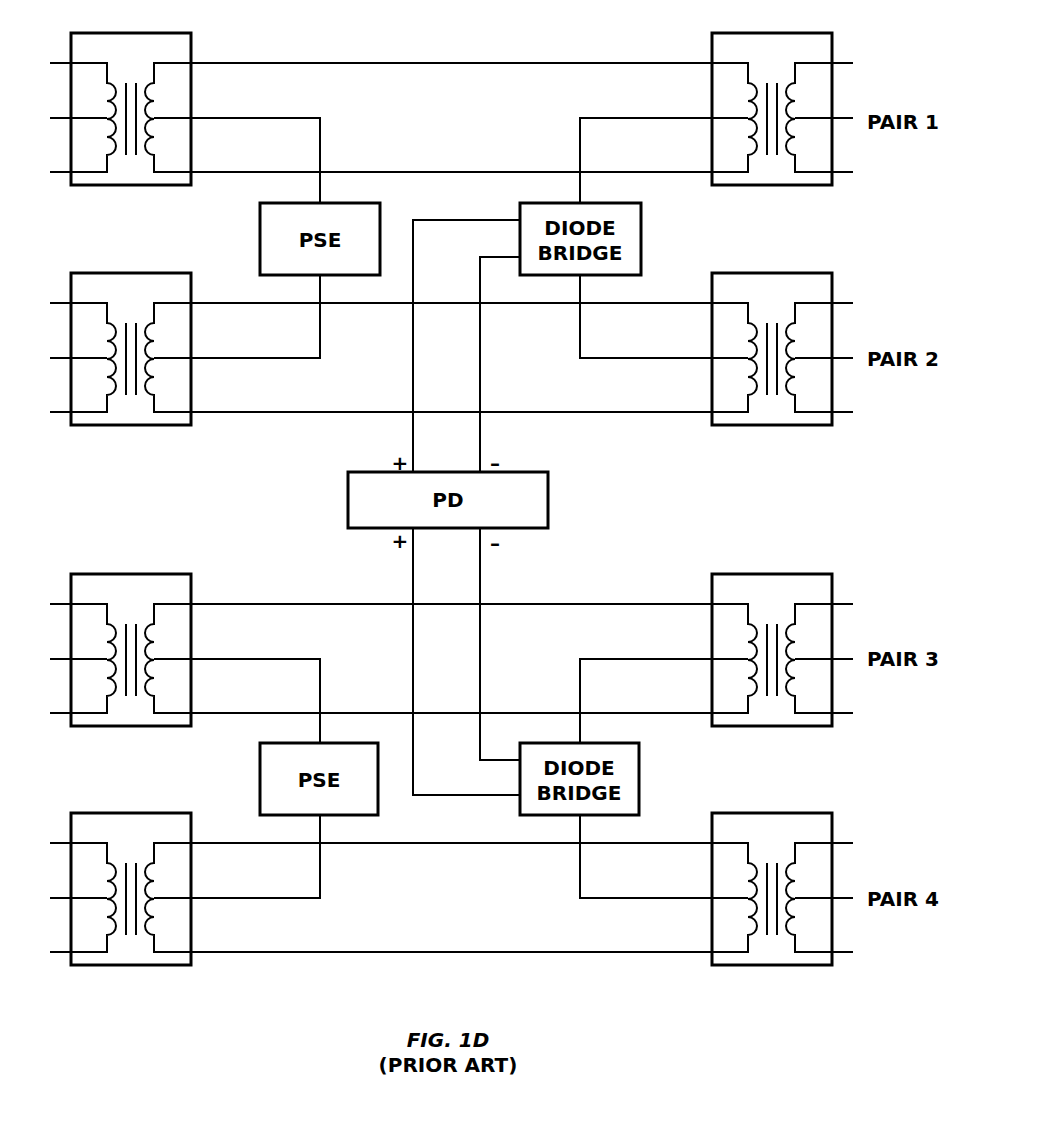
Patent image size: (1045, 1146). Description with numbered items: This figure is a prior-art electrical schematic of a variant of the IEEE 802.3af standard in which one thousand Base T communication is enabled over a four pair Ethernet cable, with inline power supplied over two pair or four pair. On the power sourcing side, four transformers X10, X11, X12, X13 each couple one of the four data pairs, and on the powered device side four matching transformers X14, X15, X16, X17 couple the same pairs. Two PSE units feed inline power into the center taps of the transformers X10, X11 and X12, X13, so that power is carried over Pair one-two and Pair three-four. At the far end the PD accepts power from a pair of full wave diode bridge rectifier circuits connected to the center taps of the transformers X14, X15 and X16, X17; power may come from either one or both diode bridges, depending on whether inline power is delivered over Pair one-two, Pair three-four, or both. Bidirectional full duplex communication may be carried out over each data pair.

The transformer X10 is at (131, 110).
The transformer X11 is at (131, 350).
The transformer X12 is at (131, 651).
The transformer X13 is at (131, 890).
The transformer X14 is at (772, 110).
The transformer X15 is at (772, 350).
The transformer X16 is at (772, 651).
The transformer X17 is at (772, 890).